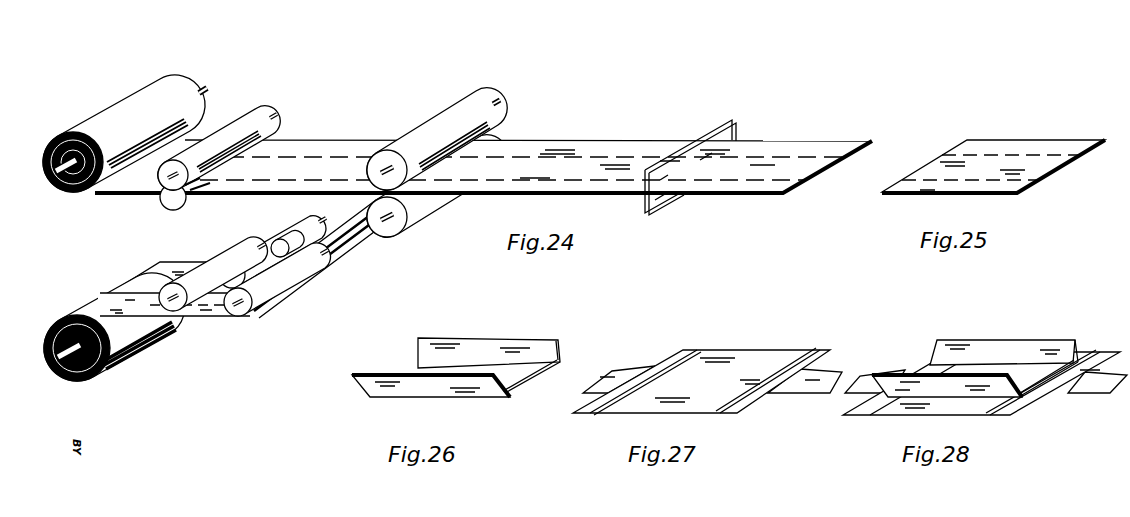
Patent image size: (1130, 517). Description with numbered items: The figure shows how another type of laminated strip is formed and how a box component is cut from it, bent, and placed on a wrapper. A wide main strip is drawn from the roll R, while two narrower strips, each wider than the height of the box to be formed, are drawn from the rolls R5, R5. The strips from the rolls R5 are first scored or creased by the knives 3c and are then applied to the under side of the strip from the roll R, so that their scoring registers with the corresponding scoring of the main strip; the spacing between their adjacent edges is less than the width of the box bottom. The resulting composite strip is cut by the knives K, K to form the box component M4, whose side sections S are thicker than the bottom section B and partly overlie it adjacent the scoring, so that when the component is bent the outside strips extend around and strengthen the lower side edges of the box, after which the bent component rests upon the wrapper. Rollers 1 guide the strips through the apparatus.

In FIG. 24, the roll R is at (115, 117).
In FIG. 24, the feed rollers 1 is at (443, 120).
In FIG. 24, the knives K is at (725, 133).
In FIG. 24, the rolls R5 is at (110, 367).
In FIG. 24, the knives 3c is at (180, 317).
In FIG. 25, the box component M4 is at (1007, 147).
In FIG. 25, the side sections S is at (1063, 148).
In FIG. 26, the side sections S is at (497, 347).
In FIG. 25, the bottom section B is at (1050, 162).
In FIG. 26, the bottom section B is at (420, 368).